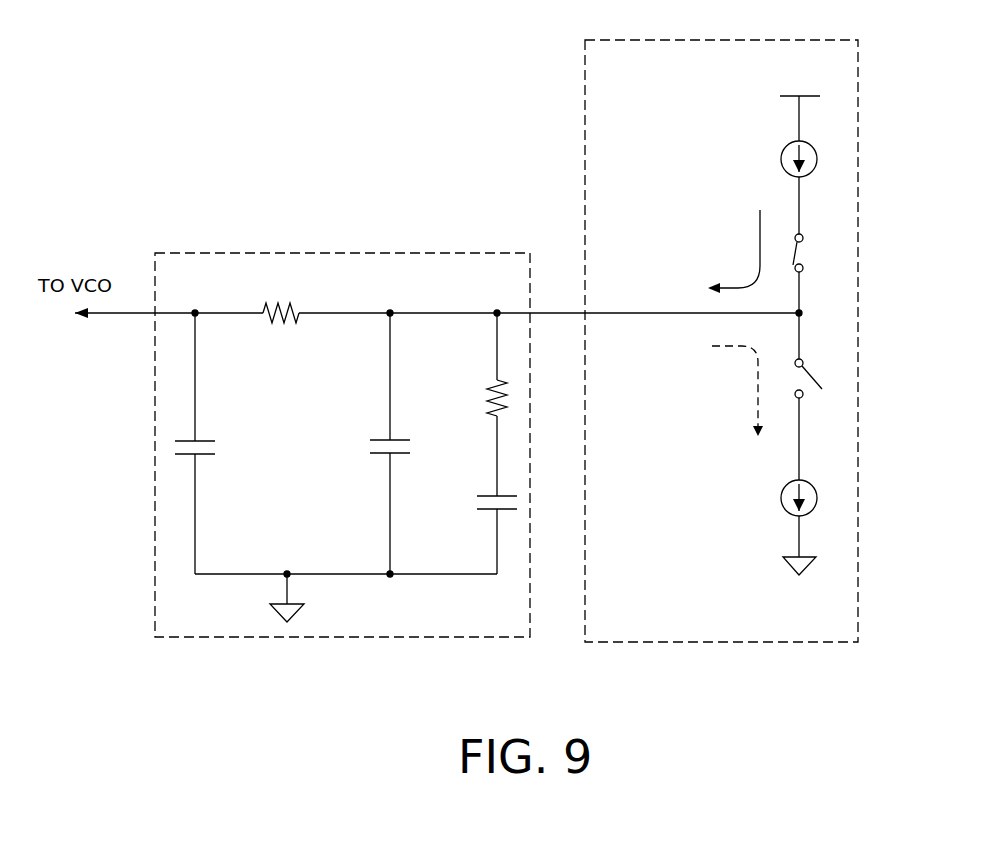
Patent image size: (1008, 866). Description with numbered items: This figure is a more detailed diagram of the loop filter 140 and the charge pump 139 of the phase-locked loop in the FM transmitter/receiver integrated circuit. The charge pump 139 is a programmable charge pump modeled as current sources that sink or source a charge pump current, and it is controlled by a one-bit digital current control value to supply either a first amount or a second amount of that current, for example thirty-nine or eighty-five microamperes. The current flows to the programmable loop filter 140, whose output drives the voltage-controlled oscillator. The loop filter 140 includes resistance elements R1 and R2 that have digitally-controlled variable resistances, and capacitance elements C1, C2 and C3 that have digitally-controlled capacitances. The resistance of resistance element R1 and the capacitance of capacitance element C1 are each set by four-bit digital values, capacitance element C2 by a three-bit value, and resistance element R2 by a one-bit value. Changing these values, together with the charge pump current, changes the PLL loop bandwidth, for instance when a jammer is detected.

The charge pump 139 is at (774, 40).
The loop filter 140 is at (334, 253).
The resistance element R1 is at (476, 364).
The resistance element R2 is at (281, 302).
The capacitance element C1 is at (481, 495).
The capacitance element C2 is at (370, 443).
The capacitance element C3 is at (217, 443).